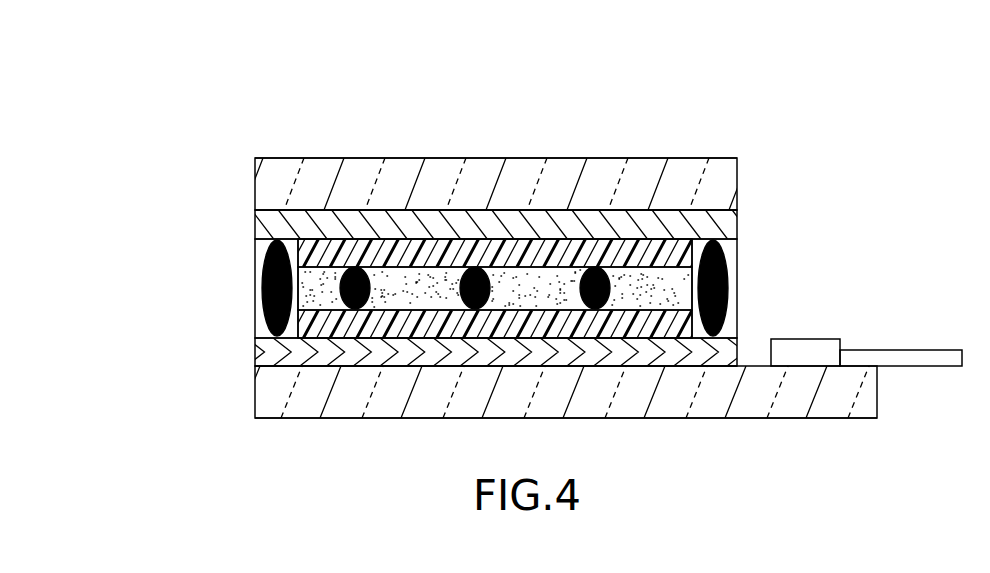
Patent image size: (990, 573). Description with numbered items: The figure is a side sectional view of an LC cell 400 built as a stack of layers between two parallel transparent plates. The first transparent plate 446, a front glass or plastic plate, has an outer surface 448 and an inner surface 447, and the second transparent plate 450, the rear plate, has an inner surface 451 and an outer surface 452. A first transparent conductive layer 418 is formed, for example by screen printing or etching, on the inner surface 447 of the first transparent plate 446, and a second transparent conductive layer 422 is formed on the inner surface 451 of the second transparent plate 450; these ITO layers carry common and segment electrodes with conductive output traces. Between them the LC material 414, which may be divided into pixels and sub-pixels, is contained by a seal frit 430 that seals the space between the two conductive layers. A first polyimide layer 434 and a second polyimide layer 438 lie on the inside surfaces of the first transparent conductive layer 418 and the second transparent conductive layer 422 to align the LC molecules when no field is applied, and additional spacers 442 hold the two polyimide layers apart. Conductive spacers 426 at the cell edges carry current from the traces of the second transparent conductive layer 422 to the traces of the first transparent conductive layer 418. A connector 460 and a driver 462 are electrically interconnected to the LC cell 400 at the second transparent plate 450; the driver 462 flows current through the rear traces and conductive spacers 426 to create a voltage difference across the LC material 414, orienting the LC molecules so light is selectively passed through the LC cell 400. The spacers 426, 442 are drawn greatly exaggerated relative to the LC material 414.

The LC cell 400 is at (222, 86).
The first transparent plate 446 is at (262, 183).
The outer surface of first transparent plate 448 is at (468, 158).
The inner surface of first transparent plate 447 is at (522, 216).
The first transparent conductive layer 418 is at (262, 227).
The seal frit 430 is at (260, 246).
The first polyimide layer 434 is at (675, 245).
The LC material 414 is at (640, 277).
The additional spacers 442 is at (598, 275).
The second polyimide layer 438 is at (680, 327).
The conductive spacers 426 is at (262, 284).
The second transparent conductive layer 422 is at (262, 350).
The second transparent plate 450 is at (262, 392).
The inner surface of second transparent plate 451 is at (362, 362).
The outer surface of second transparent plate 452 is at (385, 419).
The driver 462 is at (820, 340).
The connector 460 is at (917, 367).